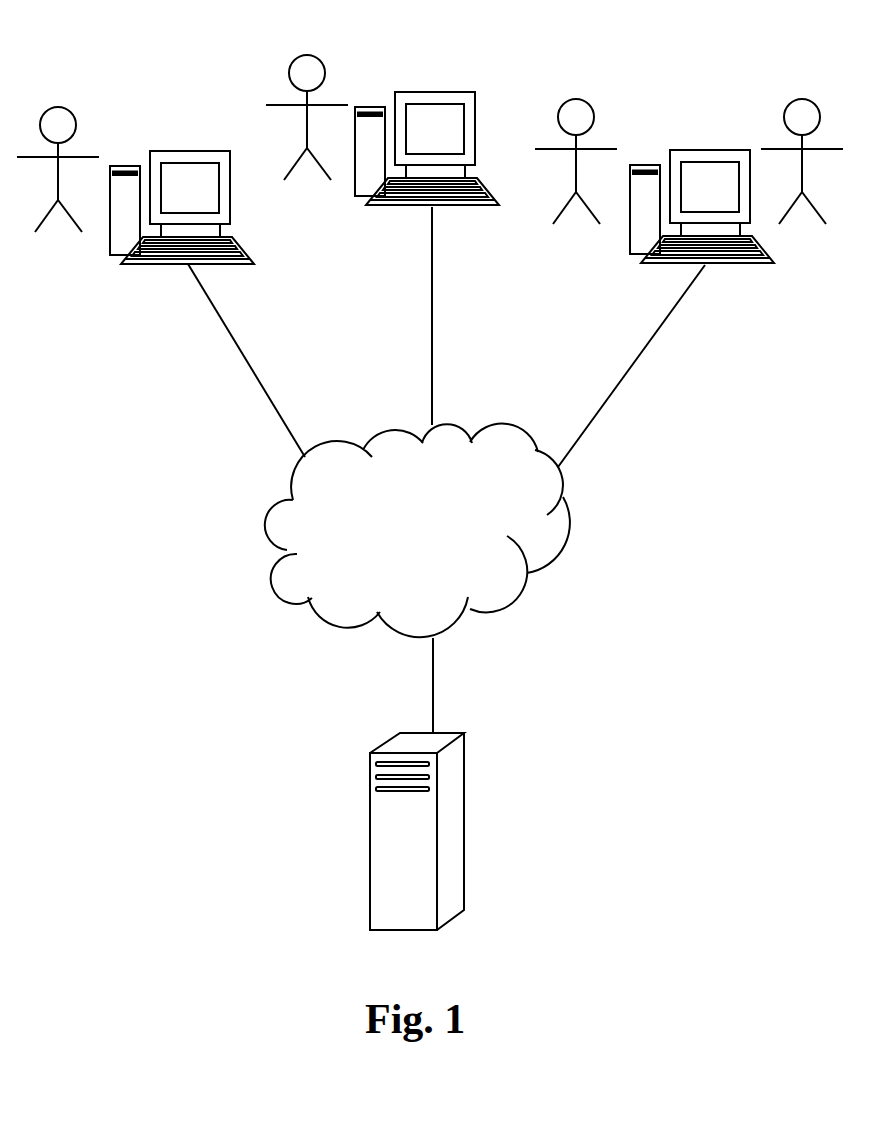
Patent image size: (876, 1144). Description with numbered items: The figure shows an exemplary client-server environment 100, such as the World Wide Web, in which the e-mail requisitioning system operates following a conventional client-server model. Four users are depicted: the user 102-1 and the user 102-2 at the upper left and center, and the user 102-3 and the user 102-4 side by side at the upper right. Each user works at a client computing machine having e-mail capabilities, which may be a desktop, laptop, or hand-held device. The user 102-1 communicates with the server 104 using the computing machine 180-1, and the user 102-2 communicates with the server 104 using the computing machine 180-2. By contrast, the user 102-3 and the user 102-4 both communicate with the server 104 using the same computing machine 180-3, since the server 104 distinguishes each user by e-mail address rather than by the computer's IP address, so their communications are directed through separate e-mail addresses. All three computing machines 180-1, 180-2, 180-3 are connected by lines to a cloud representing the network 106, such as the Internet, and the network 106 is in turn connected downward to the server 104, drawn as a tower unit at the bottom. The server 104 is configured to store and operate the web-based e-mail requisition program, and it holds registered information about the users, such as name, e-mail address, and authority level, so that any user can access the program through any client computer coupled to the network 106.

The client-server environment 100 is at (716, 577).
The user 102-1 is at (68, 112).
The user 102-2 is at (320, 58).
The user 102-3 is at (592, 106).
The user 102-4 is at (786, 106).
The computing machine 180-1 is at (153, 265).
The computing machine 180-2 is at (398, 207).
The computing machine 180-3 is at (663, 265).
The network 106 is at (417, 578).
The server 104 is at (370, 850).